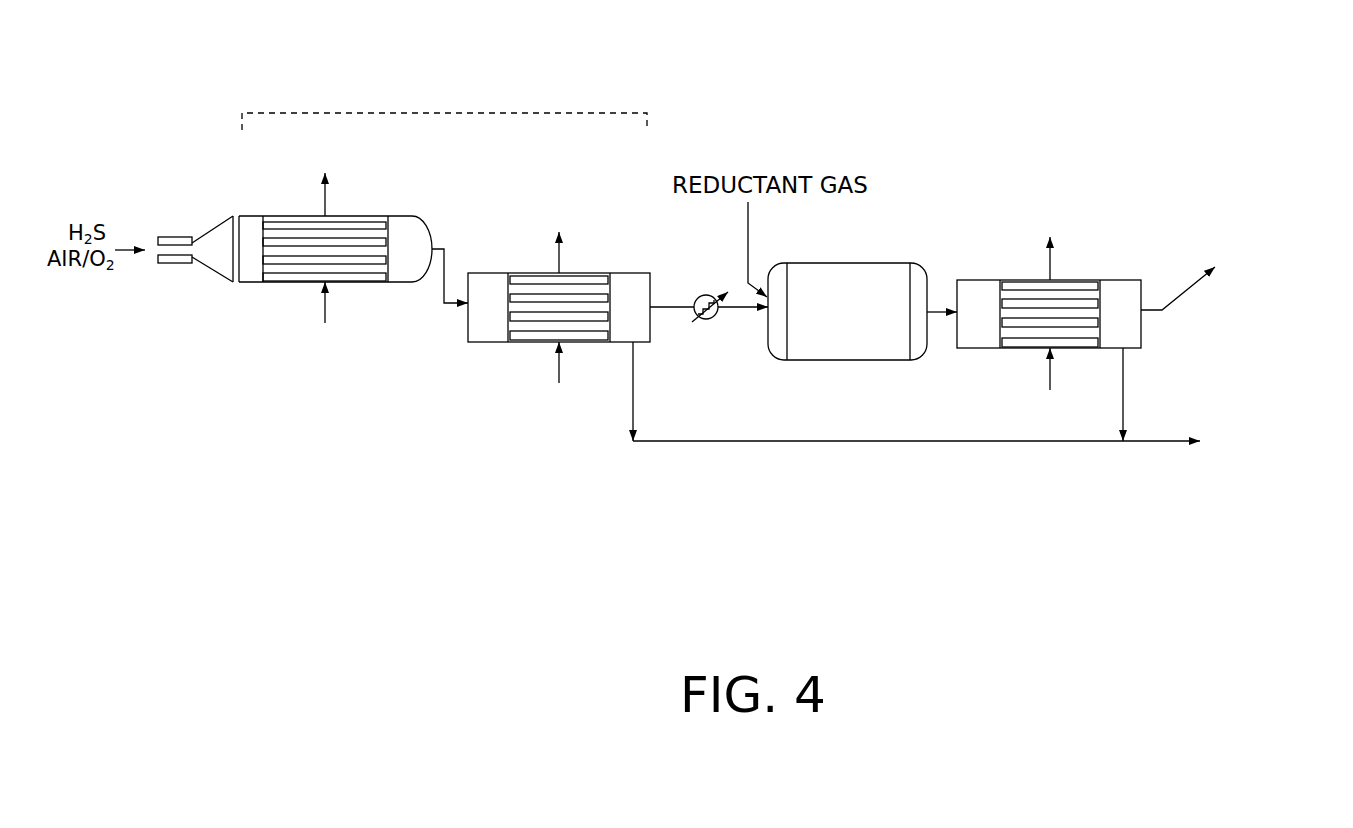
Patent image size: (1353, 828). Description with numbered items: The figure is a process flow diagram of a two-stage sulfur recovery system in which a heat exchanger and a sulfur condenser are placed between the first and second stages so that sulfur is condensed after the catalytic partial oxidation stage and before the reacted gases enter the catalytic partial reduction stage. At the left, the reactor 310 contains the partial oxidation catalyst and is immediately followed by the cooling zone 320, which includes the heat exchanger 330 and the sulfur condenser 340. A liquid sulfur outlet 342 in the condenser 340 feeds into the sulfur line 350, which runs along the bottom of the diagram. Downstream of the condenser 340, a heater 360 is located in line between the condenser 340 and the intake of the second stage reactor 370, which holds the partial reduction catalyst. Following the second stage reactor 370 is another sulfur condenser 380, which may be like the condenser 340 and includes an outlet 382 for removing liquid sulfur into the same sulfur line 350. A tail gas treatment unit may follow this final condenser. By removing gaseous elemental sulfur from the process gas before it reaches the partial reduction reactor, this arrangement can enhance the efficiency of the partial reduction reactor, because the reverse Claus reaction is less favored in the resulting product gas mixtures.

The reactor 310 is at (188, 267).
The cooling zone 320 is at (444, 92).
The heat exchanger 330 is at (315, 249).
The sulfur condenser 340 is at (586, 308).
The liquid sulfur outlet 342 is at (677, 391).
The sulfur line 350 is at (975, 465).
The heater 360 is at (736, 336).
The second stage reactor 370 is at (864, 280).
The sulfur condenser 380 is at (1136, 312).
The outlet 382 is at (1164, 394).